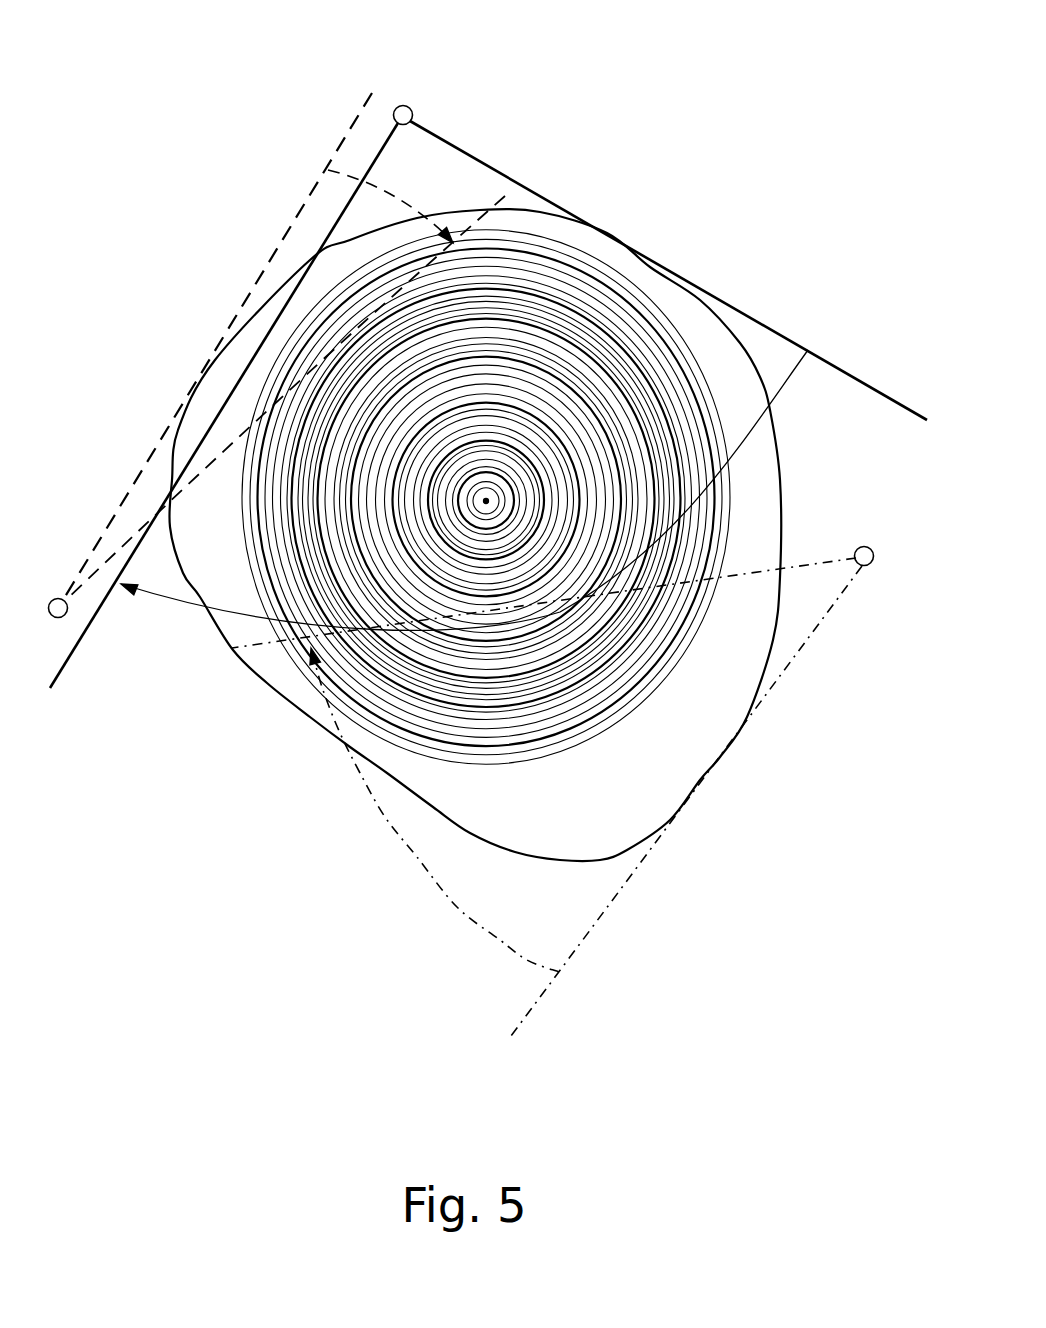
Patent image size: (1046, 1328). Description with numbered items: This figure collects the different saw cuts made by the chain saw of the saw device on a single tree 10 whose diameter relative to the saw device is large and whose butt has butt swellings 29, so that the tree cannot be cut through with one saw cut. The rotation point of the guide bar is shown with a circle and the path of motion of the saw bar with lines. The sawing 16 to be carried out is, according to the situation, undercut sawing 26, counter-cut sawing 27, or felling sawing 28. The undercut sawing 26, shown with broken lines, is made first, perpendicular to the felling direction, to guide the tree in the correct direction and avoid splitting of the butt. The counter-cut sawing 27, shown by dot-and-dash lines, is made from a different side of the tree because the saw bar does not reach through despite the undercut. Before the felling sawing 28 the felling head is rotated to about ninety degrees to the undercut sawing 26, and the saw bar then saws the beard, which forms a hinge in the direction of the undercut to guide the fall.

The tree 10 is at (605, 448).
The sawing 16 is at (198, 207).
The undercut sawing 26 is at (307, 207).
The counter-cut sawing 27 is at (575, 947).
The felling sawing 28 is at (865, 378).
The butt swellings 29 is at (217, 518).